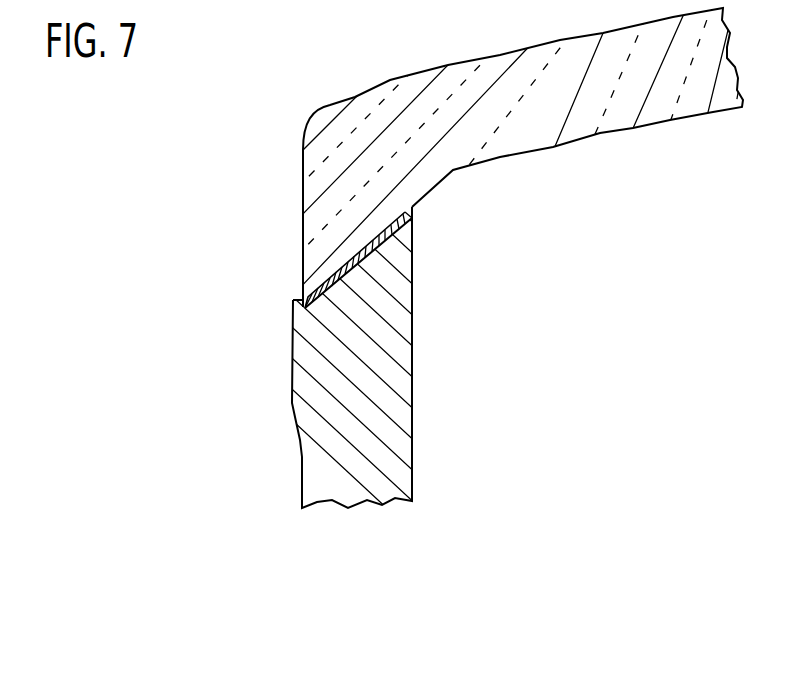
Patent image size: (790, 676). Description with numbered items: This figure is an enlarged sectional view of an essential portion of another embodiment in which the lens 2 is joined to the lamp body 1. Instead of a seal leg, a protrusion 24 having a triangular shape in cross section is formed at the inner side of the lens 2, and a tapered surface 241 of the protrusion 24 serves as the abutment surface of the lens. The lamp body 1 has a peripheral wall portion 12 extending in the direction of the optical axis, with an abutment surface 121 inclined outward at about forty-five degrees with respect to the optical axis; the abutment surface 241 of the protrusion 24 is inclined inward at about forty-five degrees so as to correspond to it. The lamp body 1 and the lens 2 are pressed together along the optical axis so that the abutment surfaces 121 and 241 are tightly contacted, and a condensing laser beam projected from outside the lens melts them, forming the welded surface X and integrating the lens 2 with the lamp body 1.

The lamp body 1 is at (348, 269).
The peripheral wall portion 12 is at (348, 269).
The abutment surface 121 is at (322, 290).
The lens 2 is at (445, 235).
The protrusion 24 is at (371, 260).
The tapered surface 241 is at (396, 276).
The welded surface X is at (398, 229).